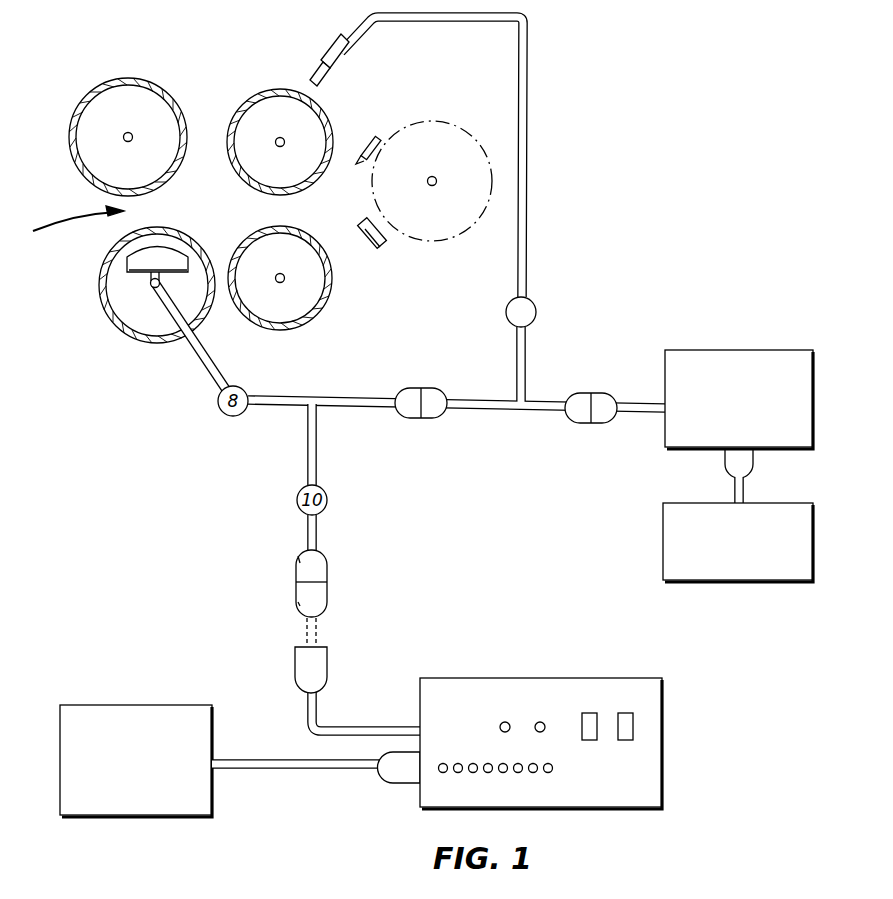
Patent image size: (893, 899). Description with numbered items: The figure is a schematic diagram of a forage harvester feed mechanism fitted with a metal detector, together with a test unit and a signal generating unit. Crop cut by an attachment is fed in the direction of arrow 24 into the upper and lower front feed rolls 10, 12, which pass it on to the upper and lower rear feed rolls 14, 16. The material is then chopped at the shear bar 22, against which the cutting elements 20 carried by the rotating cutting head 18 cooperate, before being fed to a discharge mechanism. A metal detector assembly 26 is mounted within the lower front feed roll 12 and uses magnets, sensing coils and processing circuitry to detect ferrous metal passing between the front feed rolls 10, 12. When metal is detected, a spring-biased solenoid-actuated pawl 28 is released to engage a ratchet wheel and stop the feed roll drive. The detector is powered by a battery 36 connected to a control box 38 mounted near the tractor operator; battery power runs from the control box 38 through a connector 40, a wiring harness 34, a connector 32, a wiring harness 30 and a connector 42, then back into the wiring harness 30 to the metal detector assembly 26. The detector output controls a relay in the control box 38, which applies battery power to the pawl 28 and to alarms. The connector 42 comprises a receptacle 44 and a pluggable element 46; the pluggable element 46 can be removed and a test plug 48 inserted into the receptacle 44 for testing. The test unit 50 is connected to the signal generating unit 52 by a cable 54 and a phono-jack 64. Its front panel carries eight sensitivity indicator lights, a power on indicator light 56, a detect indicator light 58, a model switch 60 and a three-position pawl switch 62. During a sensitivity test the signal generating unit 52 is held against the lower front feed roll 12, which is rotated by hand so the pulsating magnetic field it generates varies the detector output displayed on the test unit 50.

The upper front feed roll 10 is at (169, 79).
The lower front feed roll 12 is at (166, 299).
The upper rear feed roll 14 is at (262, 90).
The lower rear feed roll 16 is at (268, 226).
The rotating cutting head 18 is at (470, 122).
The cutting element 20 is at (364, 150).
The shear bar 22 is at (382, 249).
The arrow 24 is at (58, 222).
The metal detector assembly 26 is at (139, 272).
The solenoid-actuated pawl 28 is at (343, 67).
The wiring harness 30 is at (296, 397).
The connector 32 is at (432, 388).
The wiring harness 34 is at (528, 395).
The battery 36 is at (663, 548).
The control box 38 is at (680, 350).
The connector 40 is at (602, 393).
The connector 42 is at (314, 574).
The receptacle 44 is at (292, 558).
The pluggable element 46 is at (298, 600).
The test plug 48 is at (326, 660).
The test unit 50 is at (556, 721).
The signal generating unit 52 is at (160, 705).
The cable 54 is at (255, 760).
The indicator light 56 is at (500, 726).
The indicator light 58 is at (538, 721).
The model switch 60 is at (589, 741).
The pawl switch 62 is at (633, 730).
The phono-jack 64 is at (391, 779).